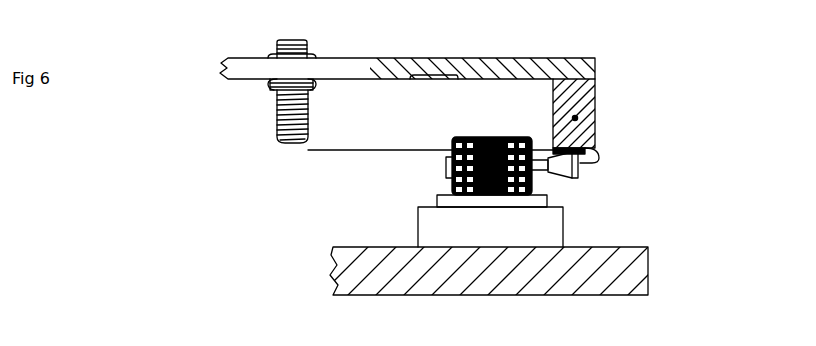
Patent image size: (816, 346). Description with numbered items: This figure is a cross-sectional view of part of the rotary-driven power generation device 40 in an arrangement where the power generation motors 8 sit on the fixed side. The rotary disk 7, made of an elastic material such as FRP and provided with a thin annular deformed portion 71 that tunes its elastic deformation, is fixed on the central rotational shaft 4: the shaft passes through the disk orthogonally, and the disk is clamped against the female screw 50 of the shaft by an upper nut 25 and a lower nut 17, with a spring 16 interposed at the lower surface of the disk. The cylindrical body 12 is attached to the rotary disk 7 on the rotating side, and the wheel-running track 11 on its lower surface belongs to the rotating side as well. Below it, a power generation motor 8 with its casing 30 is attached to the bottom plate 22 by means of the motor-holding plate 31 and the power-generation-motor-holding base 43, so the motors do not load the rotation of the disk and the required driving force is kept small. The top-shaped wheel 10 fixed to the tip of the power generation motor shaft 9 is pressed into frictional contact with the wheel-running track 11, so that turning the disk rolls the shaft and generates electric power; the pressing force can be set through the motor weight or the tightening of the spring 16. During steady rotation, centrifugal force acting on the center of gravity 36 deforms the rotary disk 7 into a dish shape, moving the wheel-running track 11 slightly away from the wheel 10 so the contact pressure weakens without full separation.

The rotary disk 7 is at (487, 58).
The deformed portion 71 is at (421, 80).
The cylindrical body 12 is at (596, 88).
The center of gravity 36 is at (578, 118).
The power generation motor shaft 9 is at (545, 150).
The upper nut 25 is at (270, 55).
The female screw 50 is at (284, 106).
The spring 16 is at (313, 82).
The lower nut 17 is at (312, 91).
The central rotational shaft 4 is at (280, 125).
The casing 30 is at (468, 137).
The power generation motor 8 is at (450, 165).
The wheel 10 is at (588, 168).
The wheel-running track 11 is at (586, 160).
The motor-holding plate 31 is at (549, 201).
The power-generation-motor-holding base 43 is at (565, 218).
The bottom plate 22 is at (345, 247).
The rotary-driven power generation device 40 is at (230, 215).